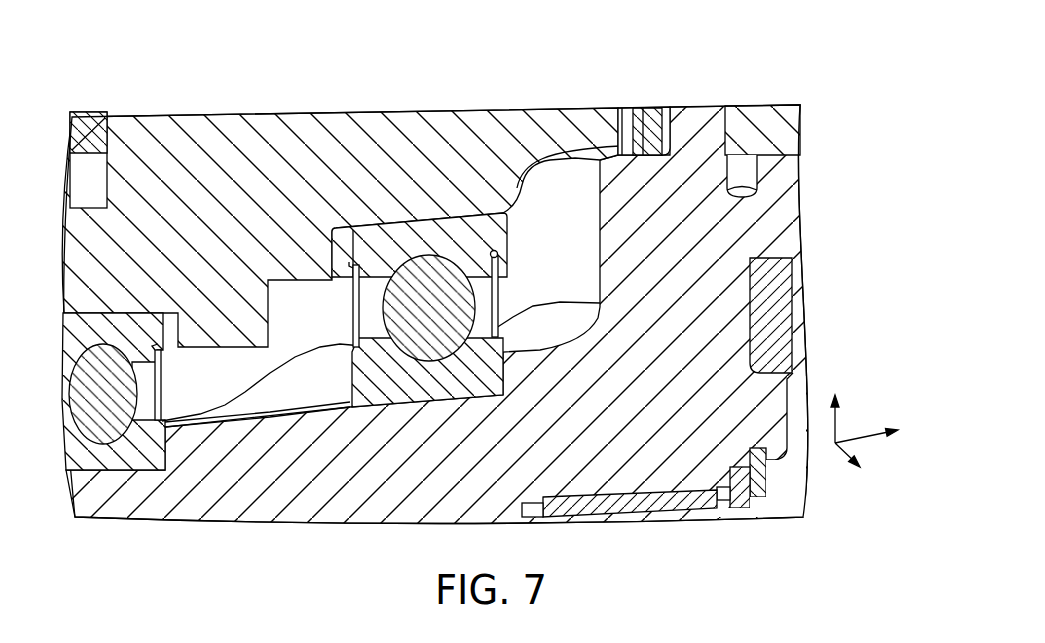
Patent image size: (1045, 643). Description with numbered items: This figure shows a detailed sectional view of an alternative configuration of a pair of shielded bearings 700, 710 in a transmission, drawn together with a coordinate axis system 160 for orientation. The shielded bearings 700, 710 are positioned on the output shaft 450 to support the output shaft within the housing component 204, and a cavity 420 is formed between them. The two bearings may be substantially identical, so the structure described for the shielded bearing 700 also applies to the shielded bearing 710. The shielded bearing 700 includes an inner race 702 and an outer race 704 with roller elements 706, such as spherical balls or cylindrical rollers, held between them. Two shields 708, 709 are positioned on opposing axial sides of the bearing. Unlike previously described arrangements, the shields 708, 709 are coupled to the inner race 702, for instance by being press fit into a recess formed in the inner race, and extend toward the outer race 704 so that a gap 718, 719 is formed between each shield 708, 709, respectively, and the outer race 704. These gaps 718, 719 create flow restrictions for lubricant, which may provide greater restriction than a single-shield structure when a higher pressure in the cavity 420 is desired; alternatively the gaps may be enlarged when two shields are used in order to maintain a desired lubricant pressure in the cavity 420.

The coordinate system 160 is at (892, 390).
The housing component 204 is at (343, 137).
The cavity 420 is at (272, 400).
The output shaft 450 is at (162, 512).
The shielded bearing 700 is at (402, 248).
The inner race 702 is at (498, 342).
The outer race 704 is at (403, 237).
The roller elements 706 is at (438, 330).
The shield 708 is at (358, 312).
The shield 709 is at (500, 297).
The shielded bearing 710 is at (107, 318).
The gap 718 is at (350, 280).
The gap 719 is at (505, 263).